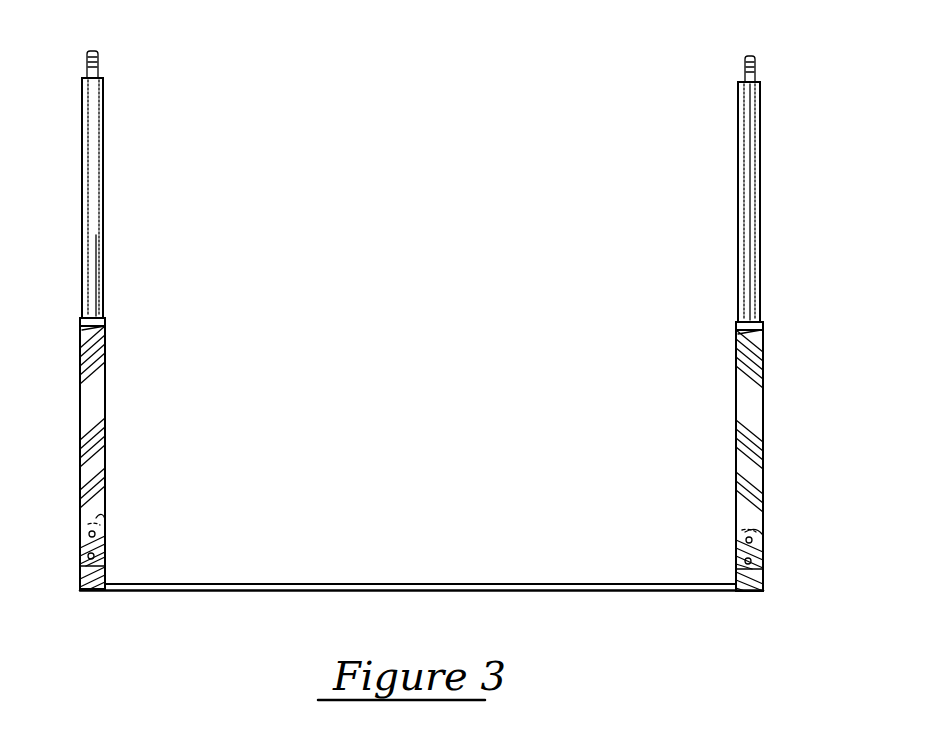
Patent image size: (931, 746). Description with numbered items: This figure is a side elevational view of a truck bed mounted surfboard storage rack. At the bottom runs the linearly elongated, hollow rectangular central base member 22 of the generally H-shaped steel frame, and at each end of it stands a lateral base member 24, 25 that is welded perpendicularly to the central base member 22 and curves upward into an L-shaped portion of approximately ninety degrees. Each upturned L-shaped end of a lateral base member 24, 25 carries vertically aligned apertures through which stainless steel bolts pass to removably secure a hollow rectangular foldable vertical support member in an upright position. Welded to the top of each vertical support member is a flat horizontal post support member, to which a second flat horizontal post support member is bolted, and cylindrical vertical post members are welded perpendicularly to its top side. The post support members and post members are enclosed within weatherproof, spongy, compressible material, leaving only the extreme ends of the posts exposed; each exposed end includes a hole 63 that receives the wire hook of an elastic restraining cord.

The central base member 22 is at (362, 583).
The lateral base member 24 is at (105, 520).
The lateral base member 25 is at (763, 530).
The hole 63 is at (87, 59).